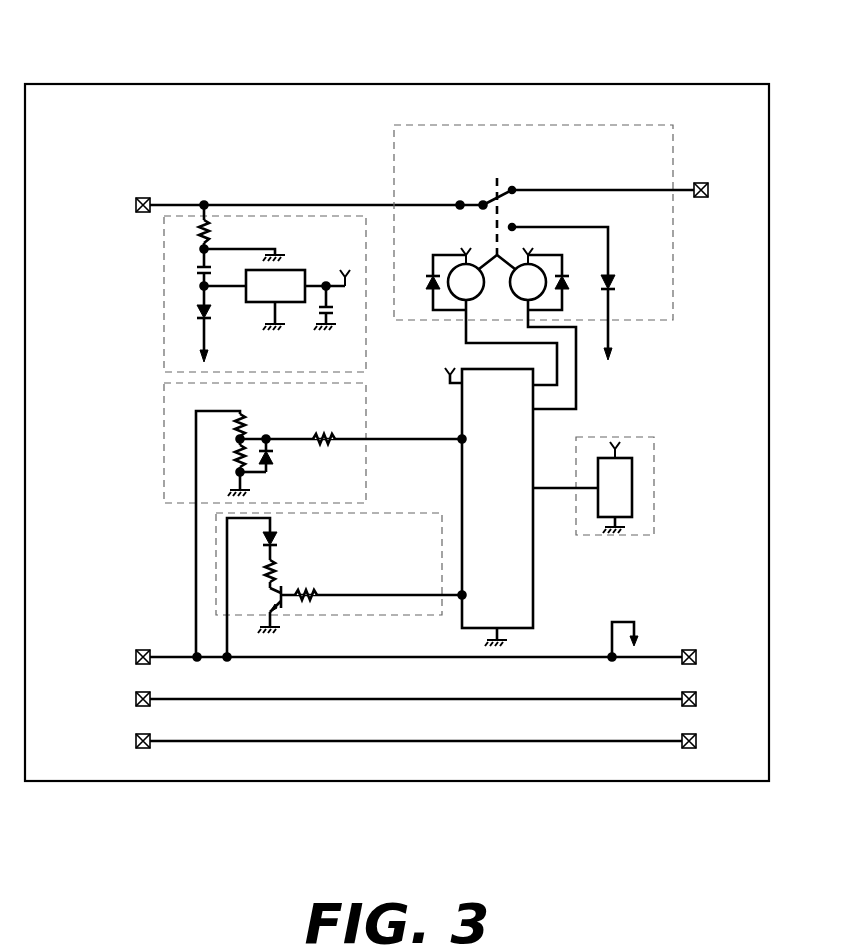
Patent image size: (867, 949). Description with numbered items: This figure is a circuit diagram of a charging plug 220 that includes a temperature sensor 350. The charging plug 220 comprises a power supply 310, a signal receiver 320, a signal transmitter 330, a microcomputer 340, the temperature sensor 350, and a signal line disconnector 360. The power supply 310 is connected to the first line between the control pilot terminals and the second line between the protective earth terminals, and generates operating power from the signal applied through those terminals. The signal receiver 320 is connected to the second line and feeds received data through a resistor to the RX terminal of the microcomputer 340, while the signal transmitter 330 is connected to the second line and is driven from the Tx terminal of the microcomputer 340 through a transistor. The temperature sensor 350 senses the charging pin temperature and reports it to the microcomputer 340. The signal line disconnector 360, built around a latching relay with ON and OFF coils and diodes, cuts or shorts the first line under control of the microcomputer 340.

The charging plug 220 is at (368, 37).
The power supply 310 is at (164, 280).
The signal receiver 320 is at (164, 418).
The signal transmitter 330 is at (410, 512).
The microcomputer 340 is at (533, 600).
The temperature sensor 350 is at (654, 468).
The signal line disconnector 360 is at (673, 283).